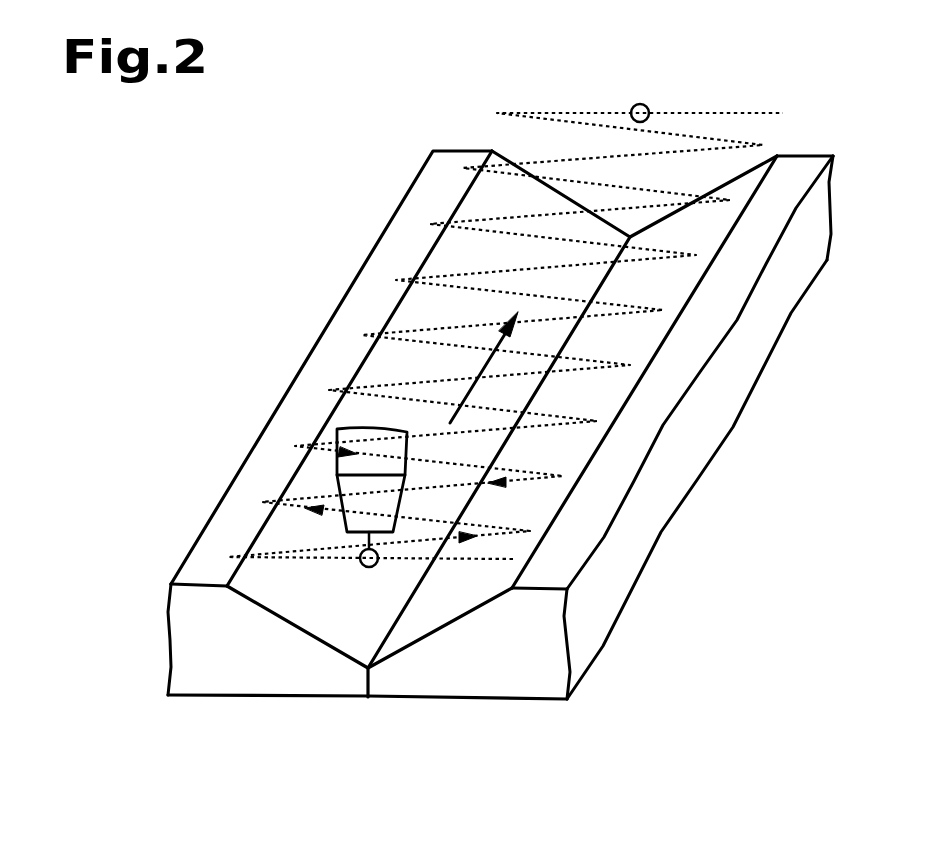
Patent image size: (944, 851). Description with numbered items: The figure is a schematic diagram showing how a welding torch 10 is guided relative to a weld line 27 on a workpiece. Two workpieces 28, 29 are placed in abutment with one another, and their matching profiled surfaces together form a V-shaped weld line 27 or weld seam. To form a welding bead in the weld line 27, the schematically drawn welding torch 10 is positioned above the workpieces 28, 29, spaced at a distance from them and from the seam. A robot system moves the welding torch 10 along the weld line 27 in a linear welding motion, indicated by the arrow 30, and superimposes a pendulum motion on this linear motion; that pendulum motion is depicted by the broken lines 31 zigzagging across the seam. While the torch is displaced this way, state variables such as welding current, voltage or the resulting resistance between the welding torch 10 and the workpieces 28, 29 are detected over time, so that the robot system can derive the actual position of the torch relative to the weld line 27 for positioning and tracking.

The welding torch 10 is at (350, 485).
The weld line 27 is at (320, 672).
The workpiece 28 is at (192, 655).
The workpiece 29 is at (490, 677).
The arrow 30 is at (486, 362).
The broken lines 31 is at (645, 189).